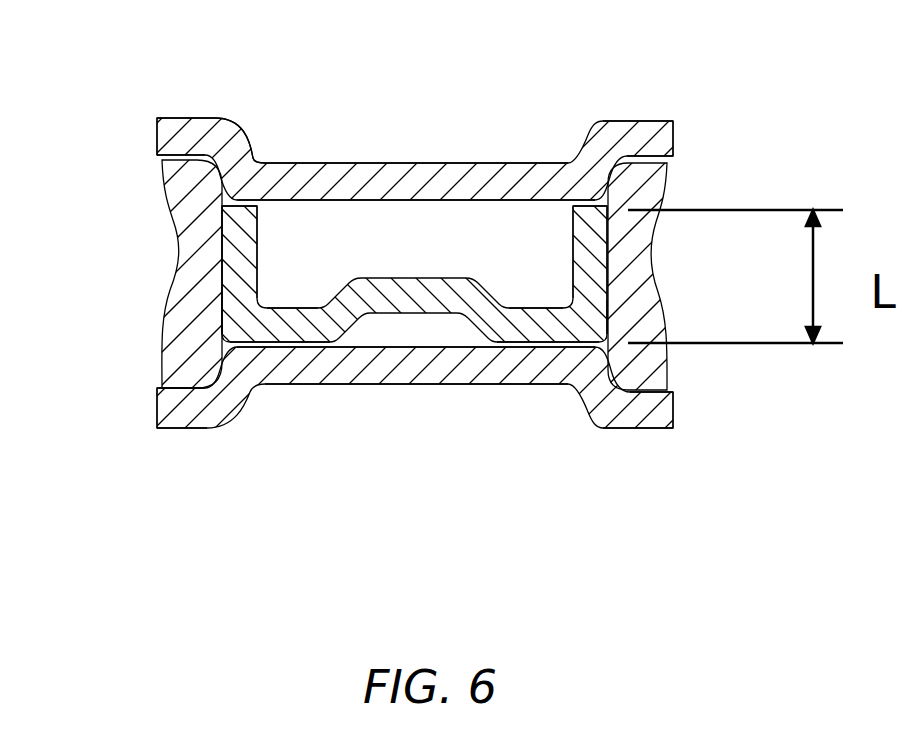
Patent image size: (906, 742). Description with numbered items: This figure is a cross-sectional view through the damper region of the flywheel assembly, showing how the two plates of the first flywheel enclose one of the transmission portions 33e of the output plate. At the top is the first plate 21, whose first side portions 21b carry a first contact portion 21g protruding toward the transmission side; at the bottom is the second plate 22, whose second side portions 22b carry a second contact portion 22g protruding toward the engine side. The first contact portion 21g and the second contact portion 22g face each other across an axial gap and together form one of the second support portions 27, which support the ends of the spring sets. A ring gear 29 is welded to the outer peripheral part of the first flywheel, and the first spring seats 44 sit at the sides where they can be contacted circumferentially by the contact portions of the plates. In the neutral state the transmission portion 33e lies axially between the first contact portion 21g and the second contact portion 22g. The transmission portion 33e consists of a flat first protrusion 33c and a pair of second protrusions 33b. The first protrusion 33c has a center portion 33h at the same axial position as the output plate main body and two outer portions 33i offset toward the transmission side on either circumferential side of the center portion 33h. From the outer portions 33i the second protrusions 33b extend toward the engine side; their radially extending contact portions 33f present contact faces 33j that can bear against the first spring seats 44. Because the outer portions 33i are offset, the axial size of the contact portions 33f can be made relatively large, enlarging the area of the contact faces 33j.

The first plate 21 is at (260, 150).
The first side portions 21b is at (188, 118).
The first contact portions 21g is at (427, 175).
The second support portions 27 is at (360, 147).
The second plate 22 is at (602, 430).
The second side portions 22b is at (183, 410).
The second contact portions 22g is at (360, 384).
The ring gear 29 is at (150, 162).
The first spring seats 44 is at (153, 373).
The transmission portions 33e is at (572, 188).
The contact portions 33f is at (235, 225).
The contact faces 33j is at (217, 277).
The second protrusions 33b is at (213, 305).
The outer portions 33i is at (287, 327).
The center portion 33h is at (415, 300).
The first protrusion 33c is at (471, 332).